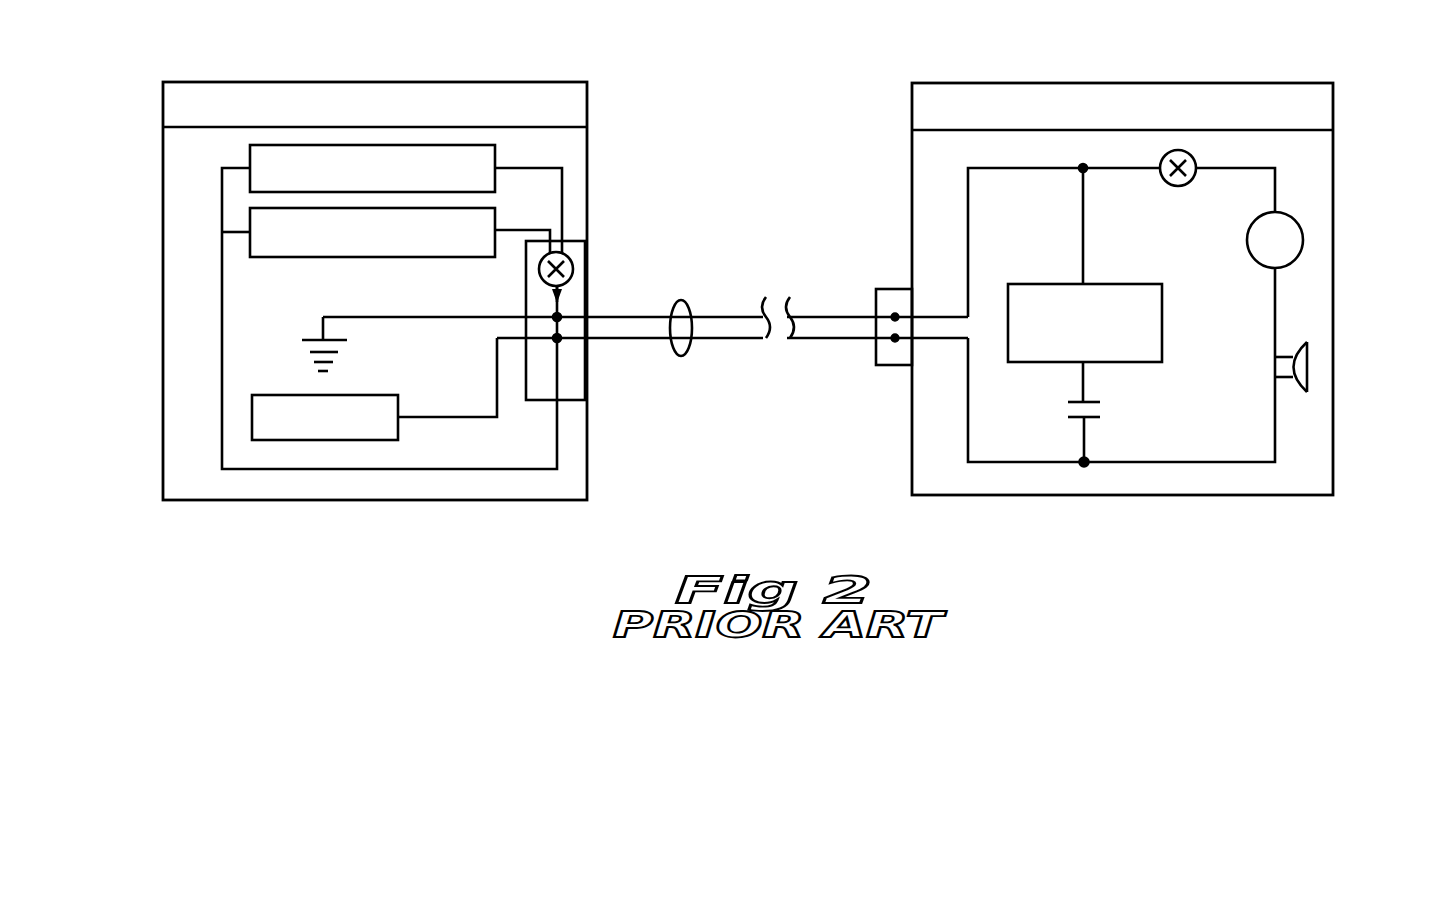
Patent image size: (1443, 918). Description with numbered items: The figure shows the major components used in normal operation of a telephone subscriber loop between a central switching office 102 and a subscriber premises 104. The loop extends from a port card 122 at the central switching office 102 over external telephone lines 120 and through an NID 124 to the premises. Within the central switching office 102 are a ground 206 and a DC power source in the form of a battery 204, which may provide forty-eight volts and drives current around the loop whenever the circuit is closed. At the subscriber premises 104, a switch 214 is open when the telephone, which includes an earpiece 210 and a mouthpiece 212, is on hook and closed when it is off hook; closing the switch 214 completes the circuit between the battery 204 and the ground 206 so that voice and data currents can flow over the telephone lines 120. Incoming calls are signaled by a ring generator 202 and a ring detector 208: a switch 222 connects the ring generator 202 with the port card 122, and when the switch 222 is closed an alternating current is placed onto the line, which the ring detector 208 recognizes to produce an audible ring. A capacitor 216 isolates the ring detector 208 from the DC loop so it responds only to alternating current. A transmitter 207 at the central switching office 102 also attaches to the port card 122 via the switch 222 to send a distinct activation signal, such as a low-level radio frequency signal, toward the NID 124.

The central switching office 102 is at (498, 98).
The subscriber premises 104 is at (1202, 100).
The external telephone lines 120 is at (690, 308).
The port card 122 is at (562, 375).
The NID 124 is at (892, 350).
The ring generator 202 is at (380, 265).
The battery 204 is at (250, 413).
The ground 206 is at (290, 352).
The transmitter 207 is at (256, 157).
The ring detector 208 is at (1167, 340).
The earpiece 210 is at (1302, 236).
The mouthpiece 212 is at (1313, 375).
The switch 214 is at (1200, 157).
The capacitor 216 is at (1073, 422).
The switch 222 is at (575, 268).